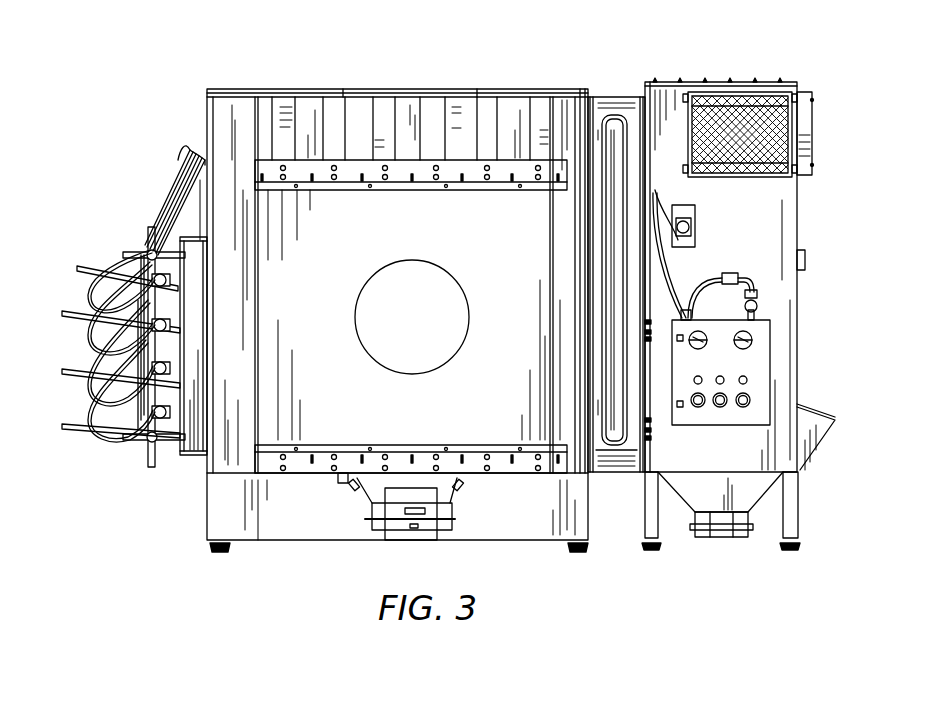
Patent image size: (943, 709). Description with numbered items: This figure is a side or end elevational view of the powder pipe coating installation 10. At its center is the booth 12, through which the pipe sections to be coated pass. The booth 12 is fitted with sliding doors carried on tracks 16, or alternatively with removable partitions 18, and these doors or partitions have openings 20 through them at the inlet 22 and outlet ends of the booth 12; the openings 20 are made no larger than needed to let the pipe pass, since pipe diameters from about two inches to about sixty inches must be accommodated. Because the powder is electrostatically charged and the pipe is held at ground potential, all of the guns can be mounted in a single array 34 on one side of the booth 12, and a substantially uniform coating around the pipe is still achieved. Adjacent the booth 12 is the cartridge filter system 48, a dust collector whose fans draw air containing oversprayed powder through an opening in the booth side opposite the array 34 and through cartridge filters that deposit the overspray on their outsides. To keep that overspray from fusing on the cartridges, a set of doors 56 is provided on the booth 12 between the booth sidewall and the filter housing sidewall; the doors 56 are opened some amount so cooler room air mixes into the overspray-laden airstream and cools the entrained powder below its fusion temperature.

The powder pipe coating installation 10 is at (178, 534).
The booth 12 is at (258, 90).
The tracks 16 is at (410, 195).
The removable partitions 18 is at (404, 317).
The openings 20 is at (448, 296).
The inlet 22 is at (240, 443).
The array 34 is at (125, 224).
The cartridge filter system 48 is at (788, 70).
The doors 56 is at (607, 155).